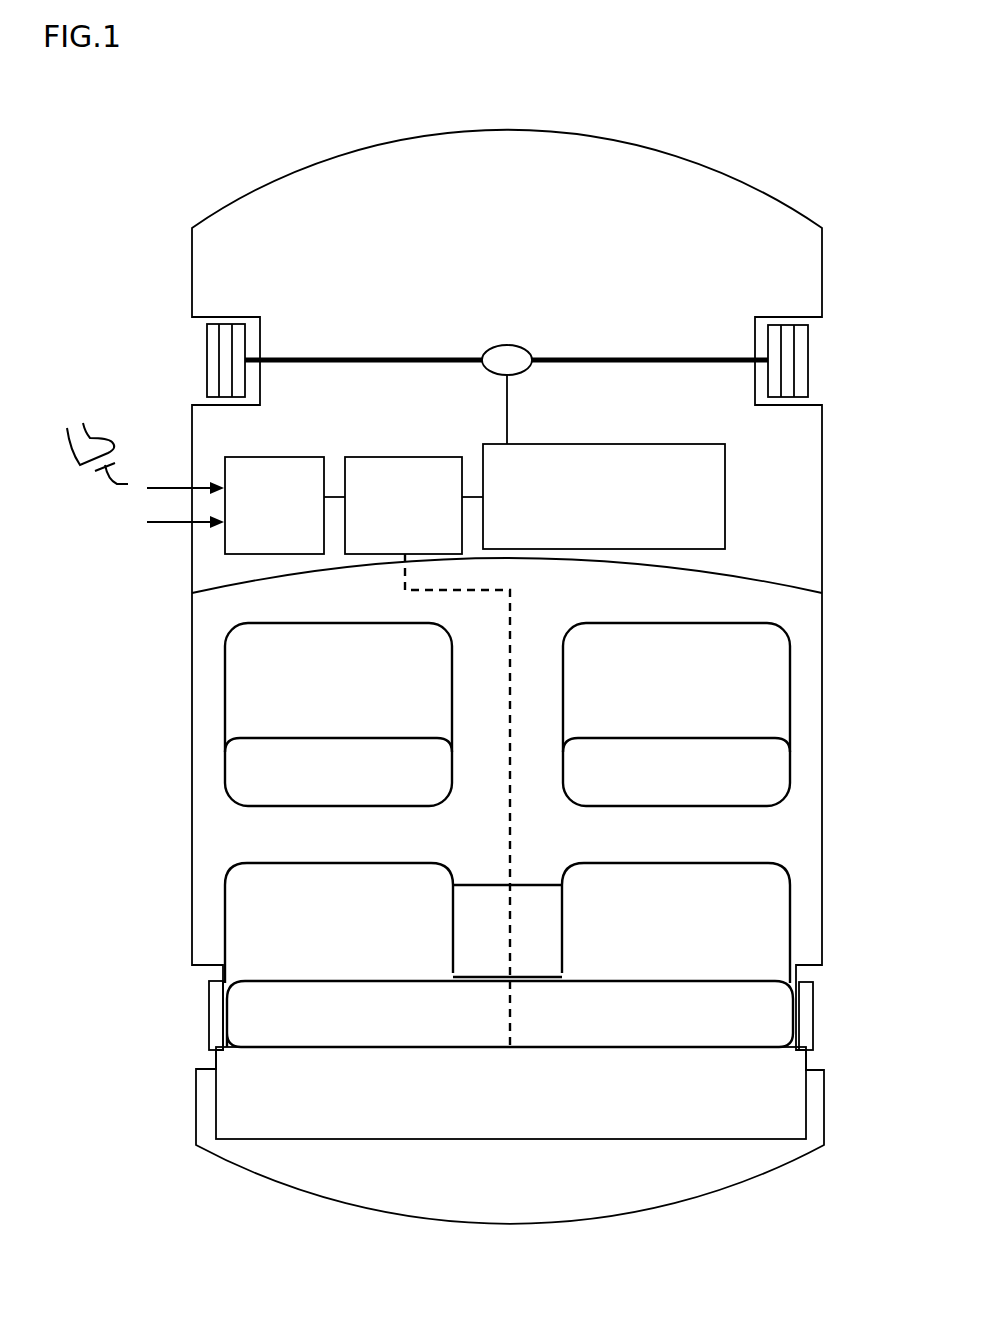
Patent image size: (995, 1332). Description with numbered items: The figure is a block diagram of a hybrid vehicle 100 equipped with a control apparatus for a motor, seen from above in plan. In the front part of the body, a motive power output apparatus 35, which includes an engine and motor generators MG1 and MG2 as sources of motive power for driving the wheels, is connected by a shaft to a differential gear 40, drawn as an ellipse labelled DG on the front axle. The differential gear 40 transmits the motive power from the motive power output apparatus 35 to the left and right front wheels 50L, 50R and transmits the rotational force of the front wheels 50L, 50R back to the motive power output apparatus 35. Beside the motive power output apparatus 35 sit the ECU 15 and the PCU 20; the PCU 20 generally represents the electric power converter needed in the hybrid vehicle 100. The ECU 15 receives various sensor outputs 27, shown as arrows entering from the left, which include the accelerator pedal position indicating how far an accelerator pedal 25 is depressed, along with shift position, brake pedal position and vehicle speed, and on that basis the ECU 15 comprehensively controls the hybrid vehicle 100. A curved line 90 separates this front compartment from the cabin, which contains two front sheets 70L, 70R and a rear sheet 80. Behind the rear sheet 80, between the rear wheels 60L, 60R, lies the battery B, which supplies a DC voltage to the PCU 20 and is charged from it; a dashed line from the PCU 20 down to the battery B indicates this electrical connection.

The hybrid vehicle 100 is at (489, 89).
The ECU 15 is at (292, 466).
The PCU 20 is at (375, 466).
The accelerator pedal 25 is at (118, 478).
The various sensor outputs 27 is at (165, 478).
The motive power output apparatus 35 is at (689, 457).
The differential gear 40 is at (506, 344).
The front wheel 50L is at (209, 360).
The front wheel 50R is at (806, 360).
The rear wheel 60L is at (213, 1013).
The rear wheel 60R is at (803, 1015).
The front sheet 70L is at (338, 634).
The front sheet 70R is at (681, 634).
The rear sheet 80 is at (340, 876).
The dashboard 90 is at (745, 580).
The battery B is at (511, 1140).